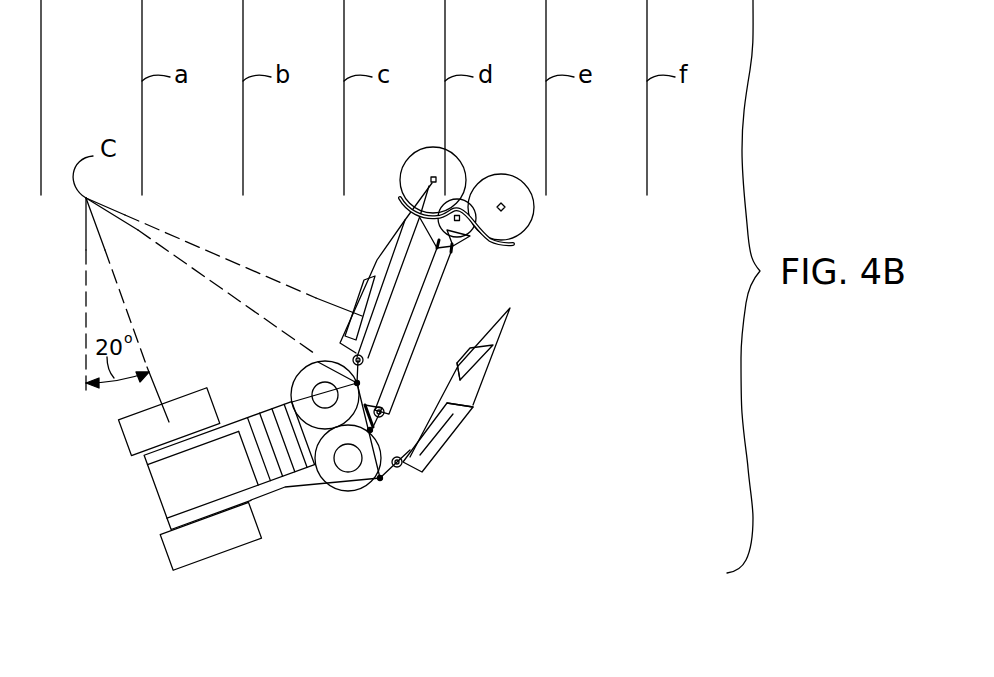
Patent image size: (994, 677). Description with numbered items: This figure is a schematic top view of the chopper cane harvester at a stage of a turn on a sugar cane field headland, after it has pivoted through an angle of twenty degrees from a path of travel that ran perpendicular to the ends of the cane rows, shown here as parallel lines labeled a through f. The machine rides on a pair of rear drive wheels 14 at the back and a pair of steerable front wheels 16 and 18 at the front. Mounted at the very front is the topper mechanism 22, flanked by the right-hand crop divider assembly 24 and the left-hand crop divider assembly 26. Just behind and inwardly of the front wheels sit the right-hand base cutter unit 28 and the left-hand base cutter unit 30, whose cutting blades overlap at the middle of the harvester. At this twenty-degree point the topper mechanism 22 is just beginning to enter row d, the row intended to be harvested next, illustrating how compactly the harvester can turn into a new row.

The rear drive wheels 14 is at (123, 440).
The steerable front wheel 16 is at (430, 460).
The steerable front wheel 18 is at (340, 338).
The topper mechanism 22 is at (428, 304).
The right-hand crop divider assembly 24 is at (483, 381).
The left-hand crop divider assembly 26 is at (382, 252).
The right-hand base cutter unit 28 is at (336, 491).
The left-hand base cutter unit 30 is at (290, 390).